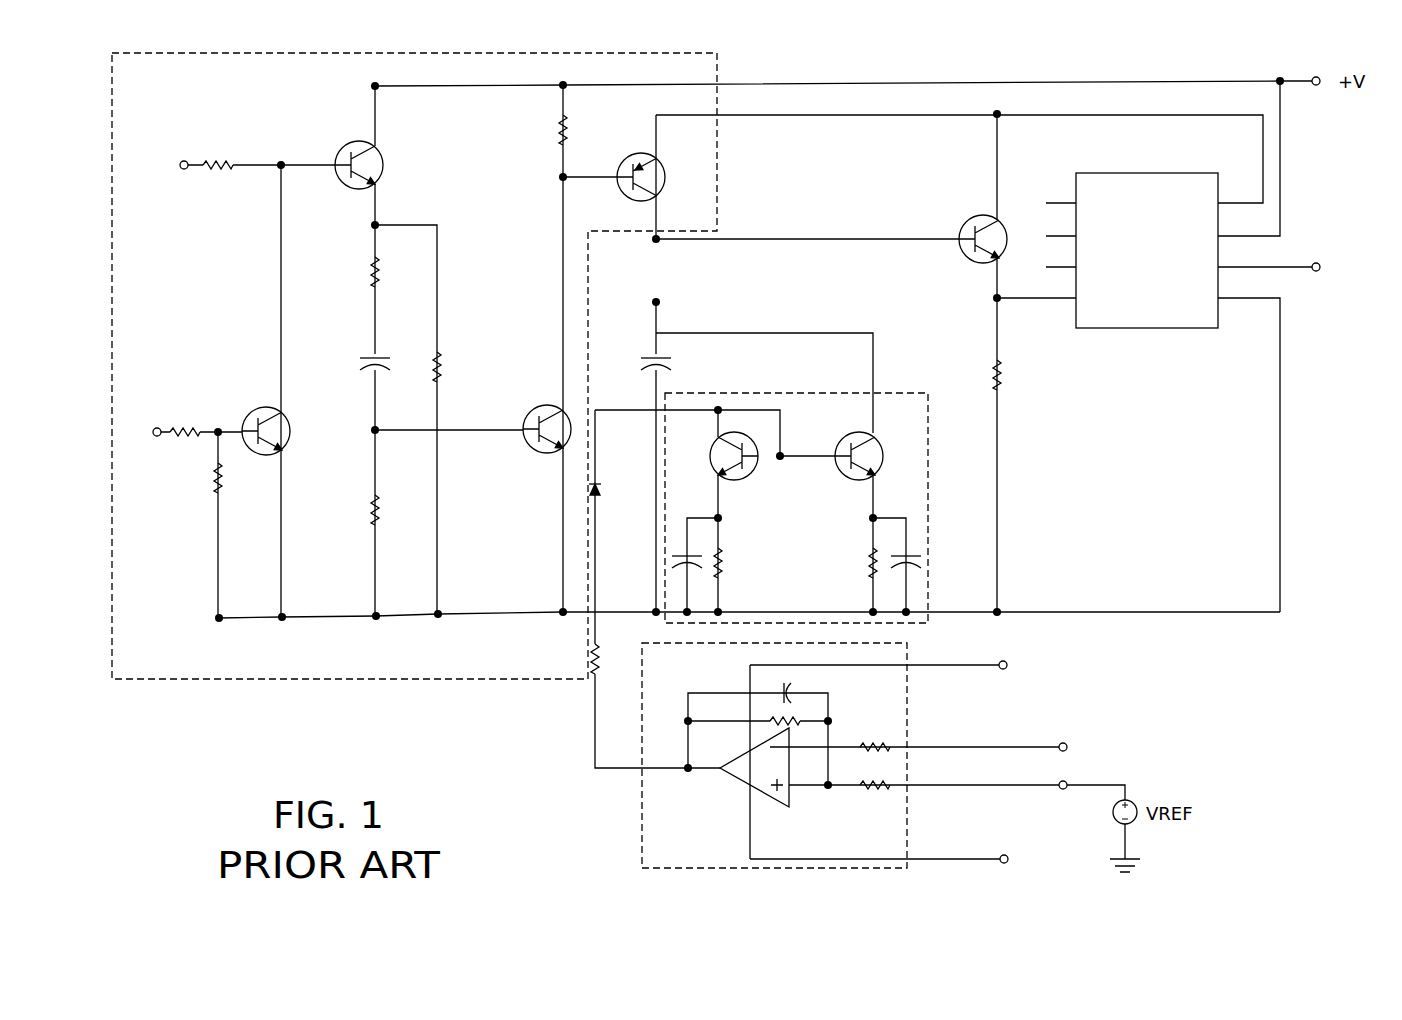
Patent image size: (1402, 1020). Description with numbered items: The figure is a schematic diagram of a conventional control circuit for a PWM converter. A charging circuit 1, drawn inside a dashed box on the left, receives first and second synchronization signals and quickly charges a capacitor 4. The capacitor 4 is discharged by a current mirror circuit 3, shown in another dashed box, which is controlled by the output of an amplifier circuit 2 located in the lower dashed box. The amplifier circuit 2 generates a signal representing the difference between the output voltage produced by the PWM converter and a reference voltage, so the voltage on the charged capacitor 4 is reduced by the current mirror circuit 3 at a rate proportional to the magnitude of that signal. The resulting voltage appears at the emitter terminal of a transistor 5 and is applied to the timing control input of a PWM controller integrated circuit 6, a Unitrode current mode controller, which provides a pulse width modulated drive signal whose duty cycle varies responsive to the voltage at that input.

The charging circuit 1 is at (360, 679).
The amplifier circuit 2 is at (640, 755).
The current mirror circuit 3 is at (795, 393).
The capacitor 4 is at (672, 363).
The transistor 5 is at (967, 256).
The PWM controller integrated circuit 6 is at (1147, 329).